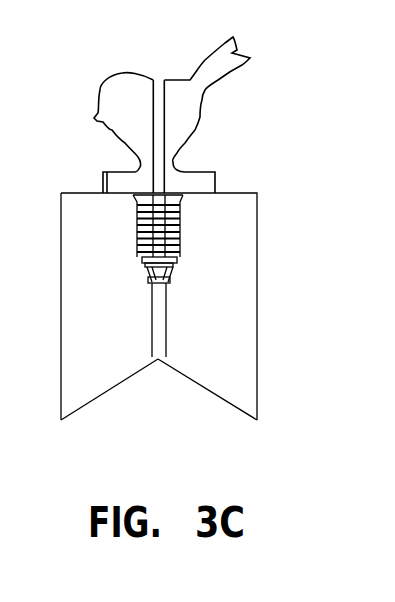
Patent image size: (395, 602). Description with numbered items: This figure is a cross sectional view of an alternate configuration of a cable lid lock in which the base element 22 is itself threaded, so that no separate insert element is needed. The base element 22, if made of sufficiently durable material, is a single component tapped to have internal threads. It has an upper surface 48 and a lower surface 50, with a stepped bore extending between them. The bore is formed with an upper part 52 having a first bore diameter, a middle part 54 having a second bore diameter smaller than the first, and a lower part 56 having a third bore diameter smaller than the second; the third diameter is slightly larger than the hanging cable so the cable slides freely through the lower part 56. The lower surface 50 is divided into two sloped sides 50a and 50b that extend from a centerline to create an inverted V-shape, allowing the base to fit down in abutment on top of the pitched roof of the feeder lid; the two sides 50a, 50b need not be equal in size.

The base element 22 is at (257, 218).
The upper surface 48 is at (240, 195).
The lower surface 50 is at (159, 425).
The sloped side 50a is at (137, 373).
The sloped side 50b is at (197, 383).
The upper part of bore 52 is at (177, 258).
The middle part of bore 54 is at (148, 266).
The lower part of bore 56 is at (160, 330).